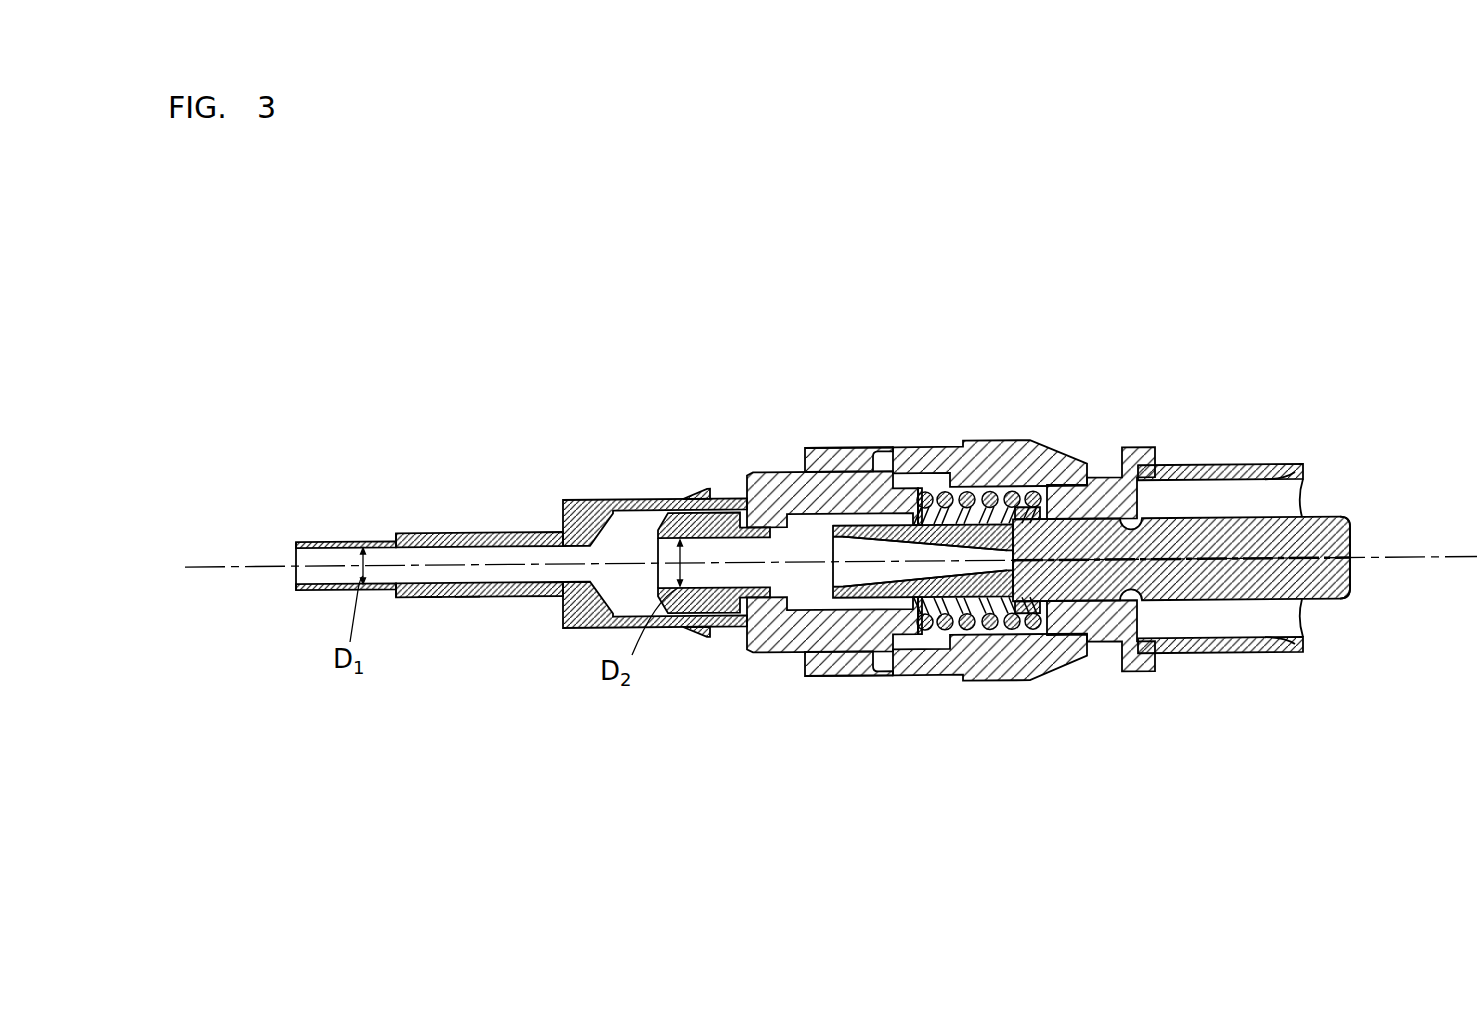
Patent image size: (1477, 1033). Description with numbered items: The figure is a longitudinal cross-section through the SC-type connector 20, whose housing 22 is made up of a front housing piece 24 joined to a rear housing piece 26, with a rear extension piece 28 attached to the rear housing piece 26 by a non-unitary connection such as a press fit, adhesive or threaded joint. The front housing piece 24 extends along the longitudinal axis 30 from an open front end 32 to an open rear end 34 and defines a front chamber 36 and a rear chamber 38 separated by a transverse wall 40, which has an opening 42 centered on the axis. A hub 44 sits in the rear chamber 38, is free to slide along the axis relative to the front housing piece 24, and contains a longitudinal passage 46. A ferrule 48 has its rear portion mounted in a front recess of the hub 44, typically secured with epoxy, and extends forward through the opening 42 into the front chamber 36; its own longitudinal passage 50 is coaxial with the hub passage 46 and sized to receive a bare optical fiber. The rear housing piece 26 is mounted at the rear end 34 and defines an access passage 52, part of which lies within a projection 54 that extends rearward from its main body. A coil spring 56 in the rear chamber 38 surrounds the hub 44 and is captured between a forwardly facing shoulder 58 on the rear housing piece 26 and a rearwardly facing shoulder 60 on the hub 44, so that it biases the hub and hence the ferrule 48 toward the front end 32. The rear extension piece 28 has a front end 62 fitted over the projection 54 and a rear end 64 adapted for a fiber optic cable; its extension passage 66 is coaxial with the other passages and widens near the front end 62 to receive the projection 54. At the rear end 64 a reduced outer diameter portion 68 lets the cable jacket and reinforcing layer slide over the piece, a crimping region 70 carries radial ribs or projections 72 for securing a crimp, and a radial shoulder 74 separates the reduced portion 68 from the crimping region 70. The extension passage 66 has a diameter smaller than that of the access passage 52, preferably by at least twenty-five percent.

The SC-type connector 20 is at (840, 300).
The housing 22 is at (822, 447).
The front housing piece 24 is at (1010, 440).
The rear housing piece 26 is at (760, 655).
The rear extension piece 28 is at (573, 626).
The longitudinal axis 30 is at (247, 574).
The front end 32 is at (1305, 465).
The rear end 34 is at (805, 458).
The front chamber 36 is at (1306, 487).
The rear chamber 38 is at (946, 632).
The transverse wall 40 is at (1130, 618).
The opening 42 is at (1136, 527).
The hub 44 is at (856, 600).
The longitudinal passage 46 is at (905, 581).
The ferrule 48 is at (1340, 612).
The longitudinal passage 50 is at (1268, 565).
The access passage 52 is at (691, 594).
The projection 54 is at (700, 500).
The coil spring 56 is at (945, 490).
The forwardly facing shoulder 58 is at (935, 488).
The rearwardly facing shoulder 60 is at (1022, 498).
The front end 62 is at (744, 630).
The rear end 64 is at (297, 590).
The extension passage 66 is at (455, 548).
The reduced outer diameter portion 68 is at (318, 542).
The crimping region 70 is at (431, 598).
The radial ribs or projections 72 is at (467, 598).
The radial shoulder 74 is at (400, 535).